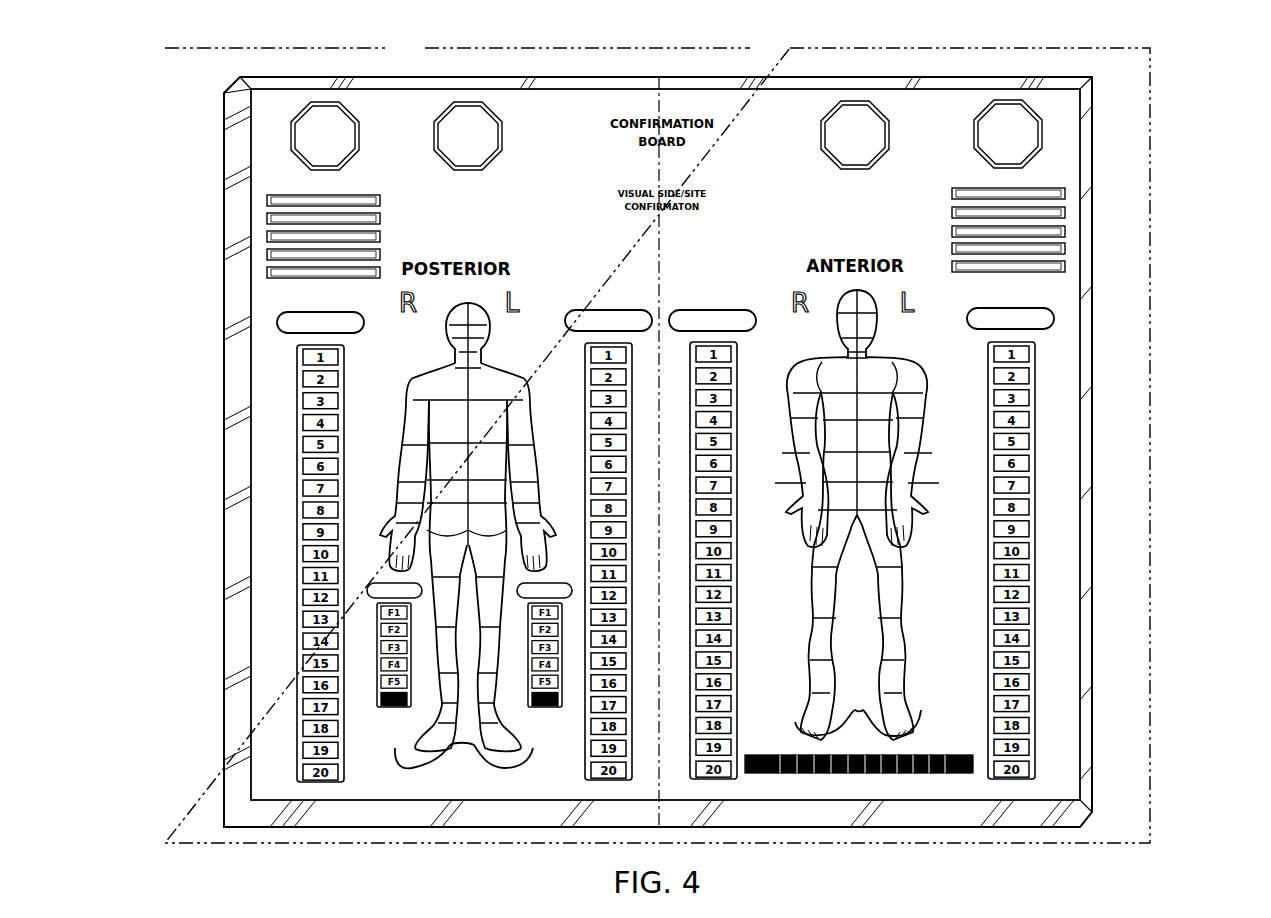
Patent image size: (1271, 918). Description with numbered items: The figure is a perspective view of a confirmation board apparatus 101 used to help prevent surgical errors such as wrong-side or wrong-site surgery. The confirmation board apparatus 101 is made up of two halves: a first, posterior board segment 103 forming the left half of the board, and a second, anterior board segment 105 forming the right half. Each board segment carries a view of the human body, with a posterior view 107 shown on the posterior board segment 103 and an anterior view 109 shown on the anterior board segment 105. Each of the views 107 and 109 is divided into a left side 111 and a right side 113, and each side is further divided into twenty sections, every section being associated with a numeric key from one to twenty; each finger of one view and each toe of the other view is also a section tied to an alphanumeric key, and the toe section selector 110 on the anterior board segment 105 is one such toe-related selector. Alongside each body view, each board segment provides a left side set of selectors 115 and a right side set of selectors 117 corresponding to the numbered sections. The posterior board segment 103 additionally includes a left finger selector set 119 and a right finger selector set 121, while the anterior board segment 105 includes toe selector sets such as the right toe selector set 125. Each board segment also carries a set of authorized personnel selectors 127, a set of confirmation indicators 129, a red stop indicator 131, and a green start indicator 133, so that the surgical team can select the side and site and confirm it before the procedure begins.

The confirmation board apparatus 101 is at (1185, 73).
The posterior board segment 103 is at (446, 417).
The anterior board segment 105 is at (869, 417).
The posterior view 107 is at (420, 760).
The anterior view 109 is at (800, 712).
The toe indicator 110 is at (833, 773).
The left side 111 is at (425, 772).
The right side 113 is at (497, 760).
The left side set of selectors 115 is at (317, 783).
The right side set of selectors 117 is at (620, 783).
The left finger selector set 119 is at (383, 708).
The right finger selector set 121 is at (545, 708).
The right toe selector set 125 is at (940, 773).
The set of authorized personnel selectors 127 is at (262, 168).
The set of confirmation indicators 129 is at (453, 192).
The red stop indicator 131 is at (326, 102).
The green start indicator 133 is at (470, 103).